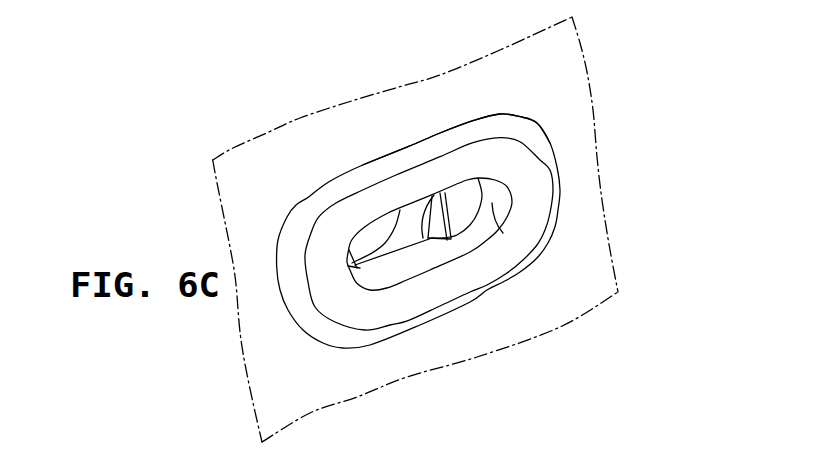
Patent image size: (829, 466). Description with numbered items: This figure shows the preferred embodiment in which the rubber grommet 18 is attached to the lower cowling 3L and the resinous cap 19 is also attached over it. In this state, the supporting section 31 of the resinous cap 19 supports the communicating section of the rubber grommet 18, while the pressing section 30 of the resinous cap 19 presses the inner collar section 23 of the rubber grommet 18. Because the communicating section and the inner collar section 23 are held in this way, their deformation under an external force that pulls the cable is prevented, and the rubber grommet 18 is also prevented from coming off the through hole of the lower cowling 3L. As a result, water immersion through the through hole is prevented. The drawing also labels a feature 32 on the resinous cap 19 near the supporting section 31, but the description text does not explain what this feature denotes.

The lower cowling 3L is at (543, 80).
The rubber grommet 18 is at (547, 140).
The resinous cap 19 is at (548, 168).
The inner collar section 23 is at (508, 128).
The pressing section 30 is at (540, 203).
The supporting section 31 is at (503, 233).
The engaging portion 32 is at (503, 233).